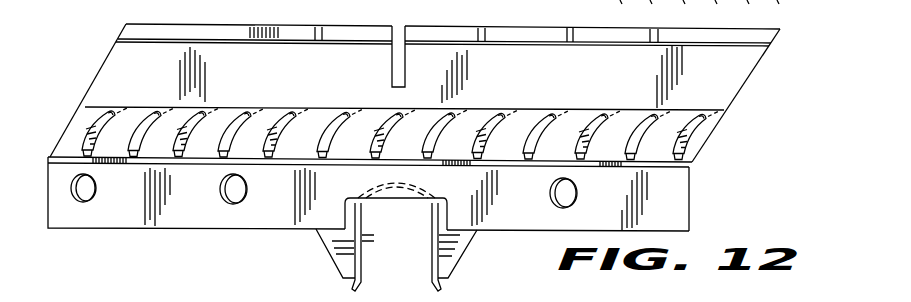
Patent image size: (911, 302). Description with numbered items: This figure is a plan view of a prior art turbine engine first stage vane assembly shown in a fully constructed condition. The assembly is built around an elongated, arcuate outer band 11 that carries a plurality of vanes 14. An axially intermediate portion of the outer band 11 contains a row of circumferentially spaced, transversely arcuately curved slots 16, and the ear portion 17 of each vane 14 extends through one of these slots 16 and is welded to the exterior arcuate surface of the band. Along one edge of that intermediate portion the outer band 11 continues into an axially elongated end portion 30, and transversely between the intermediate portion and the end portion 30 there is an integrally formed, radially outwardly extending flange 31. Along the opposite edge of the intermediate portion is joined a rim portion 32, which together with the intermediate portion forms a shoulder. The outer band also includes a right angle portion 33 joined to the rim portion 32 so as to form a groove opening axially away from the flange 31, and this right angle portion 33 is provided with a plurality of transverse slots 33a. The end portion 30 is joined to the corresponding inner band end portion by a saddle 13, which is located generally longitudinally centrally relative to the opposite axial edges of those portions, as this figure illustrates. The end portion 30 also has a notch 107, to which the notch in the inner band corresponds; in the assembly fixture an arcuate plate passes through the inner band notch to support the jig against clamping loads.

The outer band 11 is at (128, 61).
The saddle 13 is at (338, 248).
The vanes 14 is at (85, 128).
The slots 16 is at (685, 145).
The ear portion 17 is at (689, 121).
The end portion 30 is at (60, 217).
The flange 31 is at (663, 170).
The rim portion 32 is at (730, 78).
The right angle portion 33 is at (535, 0).
The transverse slots 33a is at (323, 32).
The notch 107 is at (458, 176).